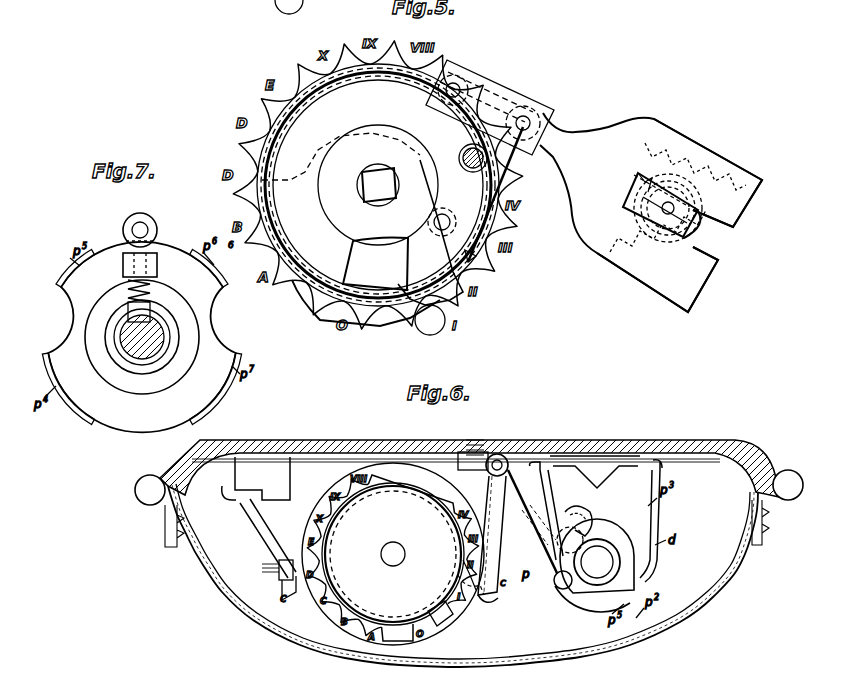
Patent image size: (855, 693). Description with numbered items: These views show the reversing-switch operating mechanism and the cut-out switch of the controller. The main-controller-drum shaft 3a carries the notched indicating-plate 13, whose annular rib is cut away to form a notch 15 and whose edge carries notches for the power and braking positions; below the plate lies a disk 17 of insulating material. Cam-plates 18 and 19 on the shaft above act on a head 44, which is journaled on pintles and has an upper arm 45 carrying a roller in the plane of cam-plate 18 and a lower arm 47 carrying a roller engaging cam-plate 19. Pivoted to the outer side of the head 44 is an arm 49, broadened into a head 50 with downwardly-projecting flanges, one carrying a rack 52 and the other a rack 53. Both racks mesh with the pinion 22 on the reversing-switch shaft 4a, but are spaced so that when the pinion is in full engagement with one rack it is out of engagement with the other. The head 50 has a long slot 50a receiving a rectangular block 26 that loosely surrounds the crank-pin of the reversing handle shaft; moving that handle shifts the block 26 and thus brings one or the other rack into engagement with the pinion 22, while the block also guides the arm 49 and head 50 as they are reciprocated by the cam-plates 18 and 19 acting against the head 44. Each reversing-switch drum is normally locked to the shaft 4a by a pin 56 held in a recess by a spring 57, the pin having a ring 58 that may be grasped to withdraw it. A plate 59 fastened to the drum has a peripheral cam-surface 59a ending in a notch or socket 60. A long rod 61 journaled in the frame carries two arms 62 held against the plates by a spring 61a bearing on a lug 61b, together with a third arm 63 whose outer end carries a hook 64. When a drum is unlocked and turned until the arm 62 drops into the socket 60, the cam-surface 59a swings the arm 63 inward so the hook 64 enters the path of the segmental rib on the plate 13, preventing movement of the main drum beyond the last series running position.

In FIG. 5, the cam-plate 18 is at (377, 185).
In FIG. 5, the cam-plate 19 is at (375, 263).
In FIG. 5, the notched indicating-plate 13 is at (377, 243).
In FIG. 6, the notched indicating-plate 13 is at (393, 554).
In FIG. 5, the lower arm 47 is at (442, 211).
In FIG. 5, the notch 15 is at (470, 258).
In FIG. 6, the notch 15 is at (462, 576).
In FIG. 5, the head 44 is at (490, 116).
In FIG. 5, the upper arm 45 is at (456, 82).
In FIG. 5, the arm 49 is at (531, 128).
In FIG. 5, the head 50 is at (651, 212).
In FIG. 5, the long slot 50a is at (698, 228).
In FIG. 5, the rack 52 is at (722, 163).
In FIG. 5, the rack 53 is at (656, 290).
In FIG. 5, the pinion 22 is at (690, 213).
In FIG. 5, the rectangular block 26 is at (700, 232).
In FIG. 7, the ring 58 is at (132, 221).
In FIG. 7, the pin 56 is at (157, 258).
In FIG. 7, the spring 57 is at (152, 286).
In FIG. 6, the disk of insulating material 17 is at (393, 554).
In FIG. 6, the main-controller-drum shaft 3a is at (393, 554).
In FIG. 6, the rod 61 is at (500, 456).
In FIG. 6, the spring 61a is at (468, 442).
In FIG. 6, the lug 61b is at (471, 470).
In FIG. 6, the arm 63 is at (492, 535).
In FIG. 6, the hook 64 is at (482, 600).
In FIG. 6, the arm 62 is at (545, 565).
In FIG. 6, the plate 59 is at (570, 540).
In FIG. 6, the peripheral cam-surface 59a is at (562, 590).
In FIG. 6, the notch or socket 60 is at (580, 516).
In FIG. 6, the reversing-switch shaft 4a is at (594, 565).